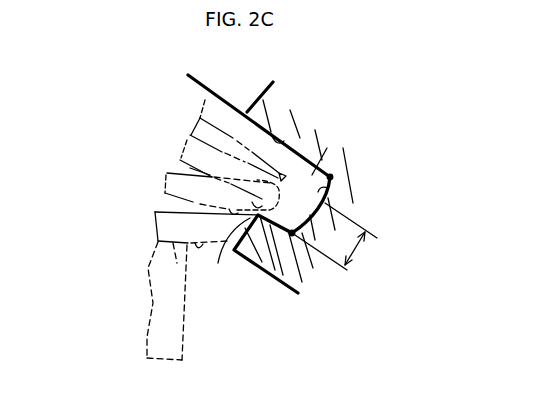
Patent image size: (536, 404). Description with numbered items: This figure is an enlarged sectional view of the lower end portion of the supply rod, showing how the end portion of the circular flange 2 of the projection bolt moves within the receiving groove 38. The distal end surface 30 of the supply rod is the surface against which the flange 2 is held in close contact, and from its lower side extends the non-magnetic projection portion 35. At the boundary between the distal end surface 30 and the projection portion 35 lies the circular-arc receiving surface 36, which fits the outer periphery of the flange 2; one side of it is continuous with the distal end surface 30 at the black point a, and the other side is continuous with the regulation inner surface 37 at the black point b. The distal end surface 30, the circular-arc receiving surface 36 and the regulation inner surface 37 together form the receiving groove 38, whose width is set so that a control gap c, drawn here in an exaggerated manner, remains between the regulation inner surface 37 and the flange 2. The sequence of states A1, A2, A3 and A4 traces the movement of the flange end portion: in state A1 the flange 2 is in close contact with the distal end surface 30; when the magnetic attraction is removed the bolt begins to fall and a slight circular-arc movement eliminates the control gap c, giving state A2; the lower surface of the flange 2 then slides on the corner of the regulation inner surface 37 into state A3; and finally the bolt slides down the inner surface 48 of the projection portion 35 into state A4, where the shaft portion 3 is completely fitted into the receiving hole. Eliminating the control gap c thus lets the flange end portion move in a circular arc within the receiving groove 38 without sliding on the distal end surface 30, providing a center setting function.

The circular flange 2 is at (233, 106).
The shaft portion 3 is at (185, 334).
The distal end surface 30 is at (293, 138).
The projection portion 35 is at (283, 270).
The circular-arc receiving surface 36 is at (327, 191).
The regulation inner surface 37 is at (262, 256).
The receiving groove 38 is at (321, 158).
The inner surface of the projection portion 48 is at (202, 249).
The A1 state A1 is at (211, 103).
The A2 state A2 is at (187, 142).
The A3 state A3 is at (167, 177).
The A4 state A4 is at (155, 220).
The black point a is at (333, 175).
The black point b is at (296, 240).
The control gap c is at (334, 236).